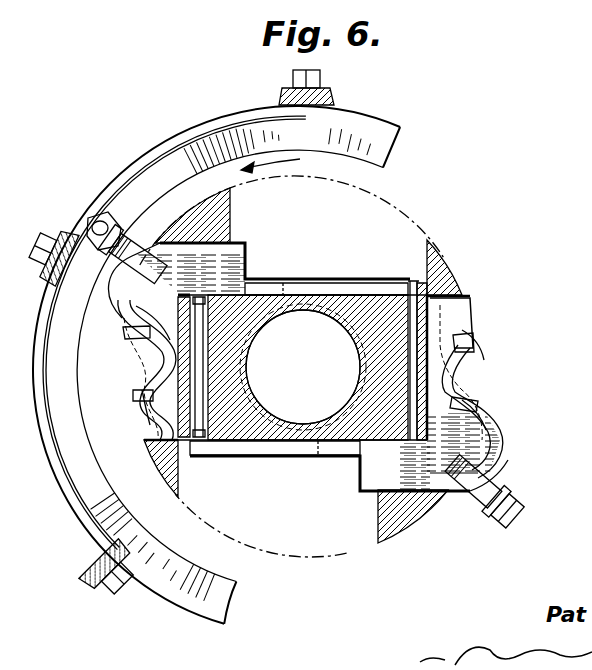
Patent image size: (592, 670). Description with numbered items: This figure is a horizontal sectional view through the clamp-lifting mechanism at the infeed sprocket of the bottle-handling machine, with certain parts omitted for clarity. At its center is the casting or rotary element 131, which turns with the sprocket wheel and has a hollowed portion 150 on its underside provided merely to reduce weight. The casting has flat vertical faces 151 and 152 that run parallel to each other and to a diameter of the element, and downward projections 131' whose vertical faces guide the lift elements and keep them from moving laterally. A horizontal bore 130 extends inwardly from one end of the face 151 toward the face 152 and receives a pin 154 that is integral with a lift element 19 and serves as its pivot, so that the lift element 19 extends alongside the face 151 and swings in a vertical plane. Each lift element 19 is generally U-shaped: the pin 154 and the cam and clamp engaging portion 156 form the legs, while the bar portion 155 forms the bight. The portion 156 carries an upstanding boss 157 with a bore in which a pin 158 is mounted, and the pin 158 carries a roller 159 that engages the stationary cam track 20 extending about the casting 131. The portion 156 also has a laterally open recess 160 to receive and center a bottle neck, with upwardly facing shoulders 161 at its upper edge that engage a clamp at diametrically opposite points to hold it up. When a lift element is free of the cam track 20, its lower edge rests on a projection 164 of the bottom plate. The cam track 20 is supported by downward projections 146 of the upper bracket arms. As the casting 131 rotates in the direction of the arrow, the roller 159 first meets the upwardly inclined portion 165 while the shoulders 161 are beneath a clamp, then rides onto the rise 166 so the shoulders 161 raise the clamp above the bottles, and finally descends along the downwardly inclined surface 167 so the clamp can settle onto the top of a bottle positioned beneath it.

The lift element 19 is at (326, 282).
The cam track 20 is at (158, 180).
The horizontal bore 130 is at (203, 442).
The casting or rotary element 131 is at (316, 366).
The downward projection 131' is at (323, 390).
The downward projection 146 is at (338, 94).
The hollowed portion 150 is at (260, 390).
The flat vertical face 151 is at (348, 296).
The flat vertical face 152 is at (372, 470).
The pin 154 is at (175, 410).
The bar portion 155 is at (296, 290).
The cam and clamp engaging portion 156 is at (145, 330).
The boss 157 is at (142, 228).
The pin 158 is at (96, 222).
The roller 159 is at (120, 228).
The laterally open recess 160 is at (140, 390).
The upwardly facing shoulders 161 is at (152, 348).
The projection 164 is at (262, 276).
The upwardly inclined portion 165 is at (212, 132).
The rise 166 is at (80, 452).
The downwardly inclined surface 167 is at (155, 560).